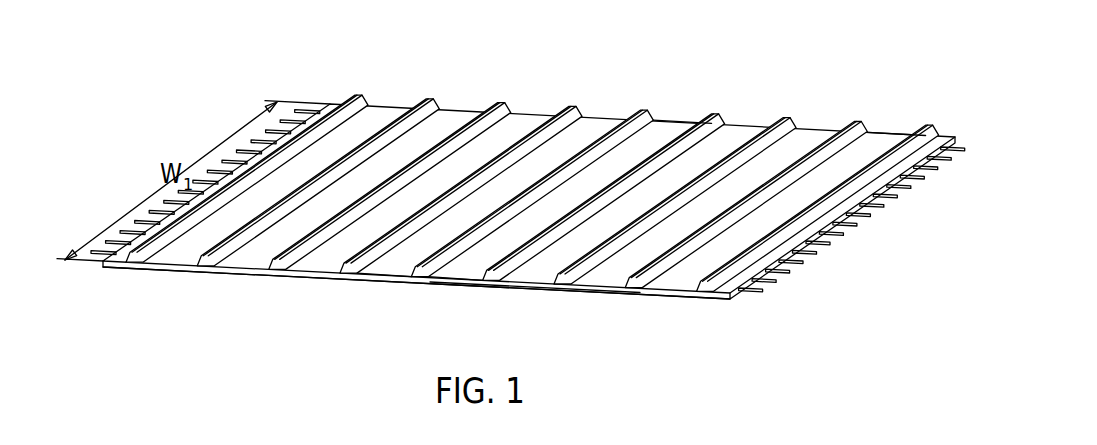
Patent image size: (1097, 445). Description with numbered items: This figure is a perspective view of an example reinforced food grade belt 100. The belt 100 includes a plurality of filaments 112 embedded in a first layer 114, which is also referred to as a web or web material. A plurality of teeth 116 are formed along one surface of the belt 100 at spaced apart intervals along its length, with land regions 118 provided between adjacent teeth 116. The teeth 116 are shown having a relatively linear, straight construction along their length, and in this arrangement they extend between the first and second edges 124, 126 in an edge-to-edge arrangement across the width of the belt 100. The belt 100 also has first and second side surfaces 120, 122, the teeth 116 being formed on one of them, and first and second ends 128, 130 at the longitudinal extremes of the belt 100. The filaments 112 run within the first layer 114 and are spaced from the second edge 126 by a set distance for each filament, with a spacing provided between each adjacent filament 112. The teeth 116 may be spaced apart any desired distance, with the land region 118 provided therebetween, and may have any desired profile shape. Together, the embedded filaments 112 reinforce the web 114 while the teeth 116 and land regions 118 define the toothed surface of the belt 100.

The reinforced food grade belt 100 is at (768, 90).
The filaments 112 is at (778, 280).
The first layer 114 is at (165, 270).
The teeth 116 is at (645, 110).
The land regions 118 is at (514, 196).
The first side surface 120 is at (476, 262).
The second side surface 122 is at (522, 292).
The first edge 124 is at (878, 131).
The second edge 126 is at (392, 268).
The first end 128 is at (140, 230).
The second end 130 is at (942, 148).